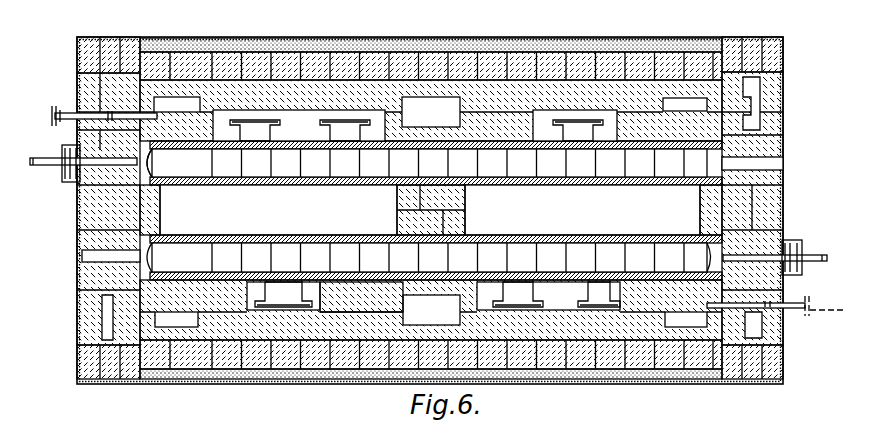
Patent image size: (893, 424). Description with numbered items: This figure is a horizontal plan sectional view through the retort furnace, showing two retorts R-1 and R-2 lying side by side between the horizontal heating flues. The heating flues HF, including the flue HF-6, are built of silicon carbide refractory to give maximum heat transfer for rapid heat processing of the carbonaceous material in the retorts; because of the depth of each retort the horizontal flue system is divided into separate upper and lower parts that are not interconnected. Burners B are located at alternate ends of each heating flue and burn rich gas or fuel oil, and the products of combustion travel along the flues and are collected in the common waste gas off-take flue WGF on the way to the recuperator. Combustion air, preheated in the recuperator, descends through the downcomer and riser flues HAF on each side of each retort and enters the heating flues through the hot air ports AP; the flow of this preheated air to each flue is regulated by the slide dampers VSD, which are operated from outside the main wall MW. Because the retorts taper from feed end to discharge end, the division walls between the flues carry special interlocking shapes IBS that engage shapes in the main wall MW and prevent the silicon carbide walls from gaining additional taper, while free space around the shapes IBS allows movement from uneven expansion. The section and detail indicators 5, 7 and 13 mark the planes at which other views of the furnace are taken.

The hot air flue HAF is at (178, 104).
The interlocking brick shape IBS is at (340, 124).
The slide damper VSD is at (80, 137).
The hot air port AP is at (176, 128).
The waste gas flue WGF is at (431, 211).
The heating flue HF is at (448, 163).
The heating flue HF-6 is at (434, 257).
The retort R-2 is at (278, 210).
The retort R-1 is at (582, 210).
The burner B is at (53, 165).
The main wall MW is at (295, 356).
The section line 5 is at (28, 166).
The section line 7 is at (345, 37).
The section line 13 is at (832, 312).